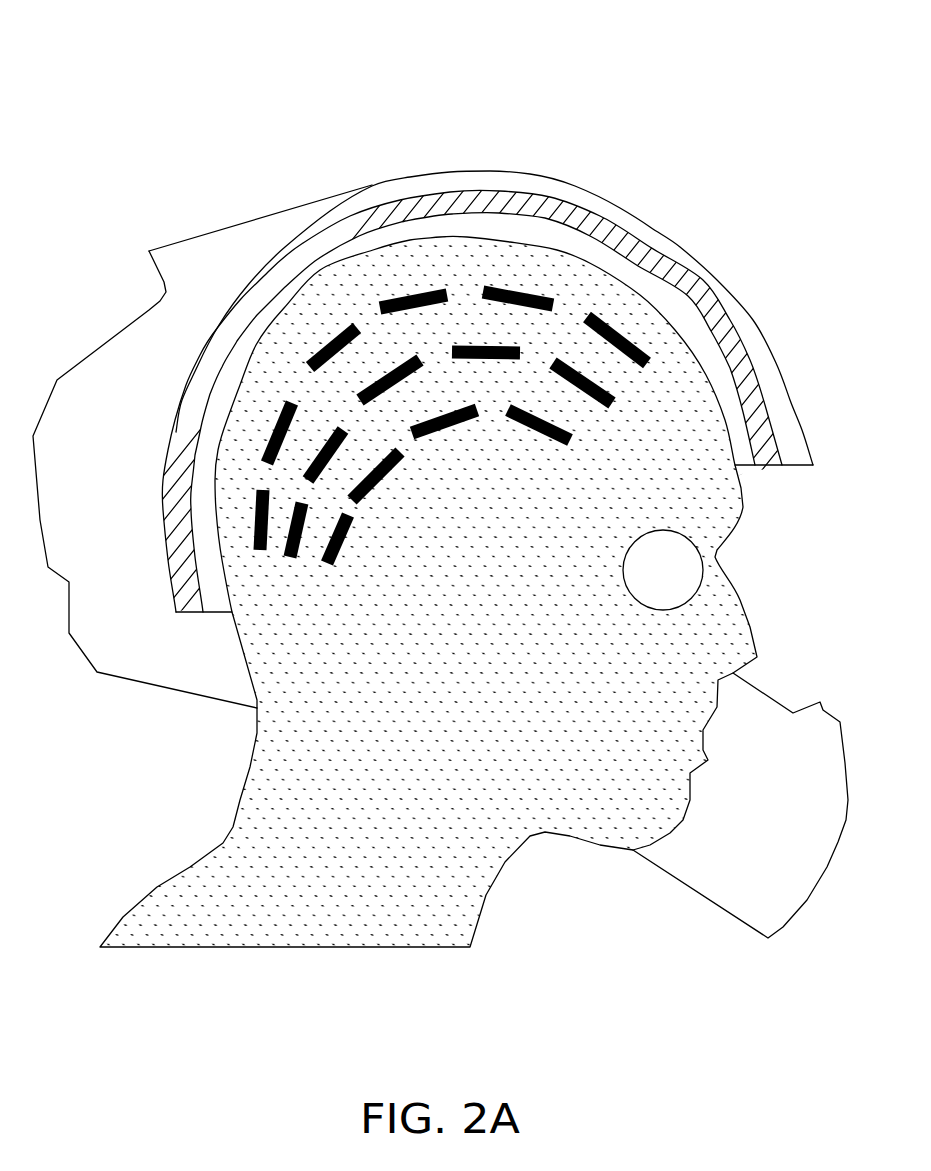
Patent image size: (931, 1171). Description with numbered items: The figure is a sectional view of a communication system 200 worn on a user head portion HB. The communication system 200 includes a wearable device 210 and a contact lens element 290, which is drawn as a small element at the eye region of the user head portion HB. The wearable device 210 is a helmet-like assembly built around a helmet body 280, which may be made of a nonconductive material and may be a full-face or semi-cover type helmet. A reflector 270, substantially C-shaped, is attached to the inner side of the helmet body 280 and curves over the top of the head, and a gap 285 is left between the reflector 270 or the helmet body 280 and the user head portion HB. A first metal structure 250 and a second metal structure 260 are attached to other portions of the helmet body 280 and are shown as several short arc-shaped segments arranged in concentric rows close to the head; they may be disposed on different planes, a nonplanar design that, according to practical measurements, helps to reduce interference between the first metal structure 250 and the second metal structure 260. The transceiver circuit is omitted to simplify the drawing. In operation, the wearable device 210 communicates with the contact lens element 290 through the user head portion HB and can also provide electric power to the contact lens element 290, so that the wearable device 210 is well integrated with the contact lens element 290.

The communication system 200 is at (75, 31).
The wearable device 210 is at (168, 196).
The first metal structure 250 is at (323, 343).
The second metal structure 260 is at (474, 343).
The reflector 270 is at (375, 212).
The helmet body 280 is at (144, 661).
The gap 285 is at (670, 297).
The contact lens element 290 is at (677, 567).
The user head portion HB is at (535, 785).